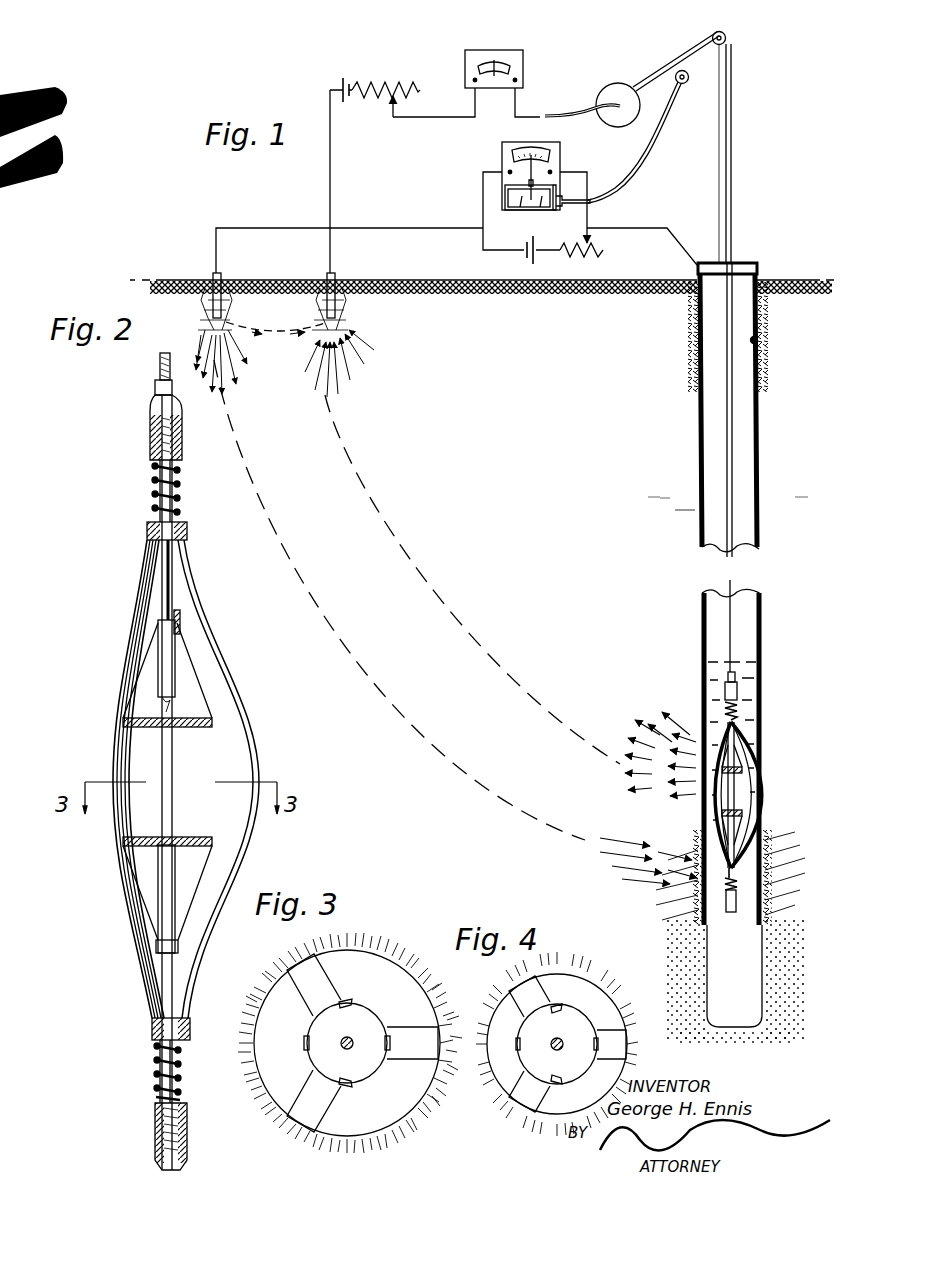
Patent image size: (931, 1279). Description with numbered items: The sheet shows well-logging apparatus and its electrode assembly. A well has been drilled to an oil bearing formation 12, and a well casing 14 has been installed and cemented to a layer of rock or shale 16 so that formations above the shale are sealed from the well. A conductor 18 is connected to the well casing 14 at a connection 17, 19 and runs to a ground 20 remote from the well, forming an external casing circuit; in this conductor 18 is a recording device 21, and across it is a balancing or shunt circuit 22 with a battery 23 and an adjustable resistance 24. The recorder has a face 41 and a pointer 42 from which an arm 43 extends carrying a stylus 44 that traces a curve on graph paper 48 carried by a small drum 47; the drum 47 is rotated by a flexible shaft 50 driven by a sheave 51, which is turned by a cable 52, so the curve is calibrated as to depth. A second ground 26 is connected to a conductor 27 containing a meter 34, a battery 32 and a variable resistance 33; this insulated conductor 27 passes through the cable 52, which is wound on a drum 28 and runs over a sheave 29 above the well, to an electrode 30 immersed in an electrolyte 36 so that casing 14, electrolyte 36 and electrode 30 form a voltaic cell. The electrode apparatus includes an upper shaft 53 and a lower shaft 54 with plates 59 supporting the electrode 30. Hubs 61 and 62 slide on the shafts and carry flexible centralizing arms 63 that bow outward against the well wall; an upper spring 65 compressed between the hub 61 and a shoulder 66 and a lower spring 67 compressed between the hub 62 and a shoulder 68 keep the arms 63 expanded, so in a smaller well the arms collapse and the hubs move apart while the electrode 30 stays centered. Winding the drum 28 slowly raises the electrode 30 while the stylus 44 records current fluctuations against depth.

In FIG. 1, the oil bearing formation 12 is at (762, 935).
In FIG. 1, the well casing 14 is at (698, 511).
In FIG. 1, the layer of rock or shale 16 is at (790, 860).
In FIG. 1, the casing connection 17 is at (758, 340).
In FIG. 1, the conductor 18 is at (275, 228).
In FIG. 1, the connection to well casing 19 is at (698, 268).
In FIG. 1, the ground 20 is at (213, 276).
In FIG. 1, the recording device 21 is at (500, 150).
In FIG. 1, the balancing or shunt circuit 22 is at (483, 248).
In FIG. 1, the battery or source of energy 23 is at (524, 258).
In FIG. 1, the adjustable resistance 24 is at (581, 261).
In FIG. 1, the ground 26 is at (335, 276).
In FIG. 1, the conductor 27 is at (342, 84).
In FIG. 1, the drum 28 is at (615, 84).
In FIG. 1, the sheave 29 is at (727, 38).
In FIG. 1, the electrode 30 is at (764, 789).
In FIG. 2, the electrode 30 is at (163, 760).
In FIG. 3, the electrode 30 is at (352, 1048).
In FIG. 4, the electrode 30 is at (557, 1050).
In FIG. 1, the battery 32 is at (353, 88).
In FIG. 1, the variable resistance 33 is at (398, 98).
In FIG. 1, the recording means or meter 34 is at (492, 52).
In FIG. 1, the electrolyte 36 is at (750, 695).
In FIG. 1, the face 41 is at (560, 155).
In FIG. 1, the pointer 42 is at (509, 172).
In FIG. 1, the arm 43 is at (571, 193).
In FIG. 1, the stylus 44 is at (541, 208).
In FIG. 1, the drum 47 is at (505, 196).
In FIG. 1, the graph paper 48 is at (522, 208).
In FIG. 1, the flexible shaft 50 is at (642, 160).
In FIG. 1, the sheave 51 is at (684, 84).
In FIG. 1, the cable 52 is at (690, 58).
In FIG. 2, the cable 52 is at (160, 367).
In FIG. 2, the upper shaft 53 is at (164, 596).
In FIG. 2, the lower shaft 54 is at (168, 1076).
In FIG. 2, the plates 59 is at (125, 737).
In FIG. 3, the plates 59 is at (330, 1025).
In FIG. 4, the plates 59 is at (530, 1046).
In FIG. 2, the hub 61 is at (147, 532).
In FIG. 2, the hub 62 is at (152, 1028).
In FIG. 2, the centralizing arms 63 is at (226, 652).
In FIG. 3, the centralizing arms 63 is at (288, 963).
In FIG. 4, the centralizing arms 63 is at (452, 1016).
In FIG. 2, the upper spring 65 is at (178, 496).
In FIG. 2, the shoulder 66 is at (150, 436).
In FIG. 2, the lower spring 67 is at (155, 1098).
In FIG. 2, the shoulder 68 is at (158, 1113).